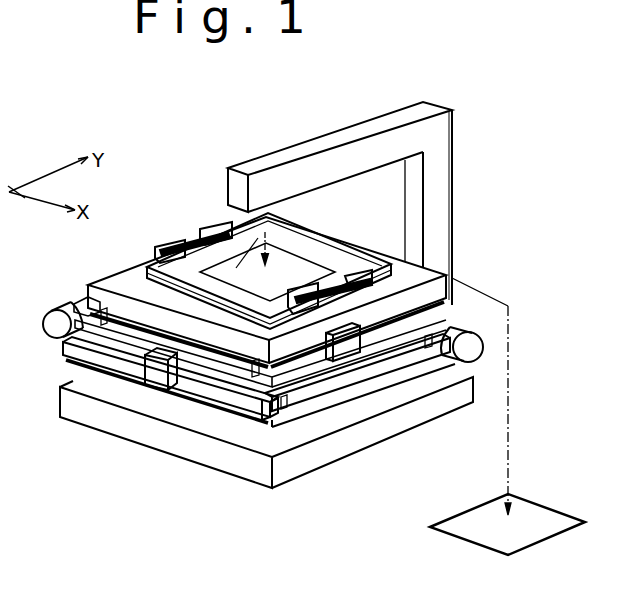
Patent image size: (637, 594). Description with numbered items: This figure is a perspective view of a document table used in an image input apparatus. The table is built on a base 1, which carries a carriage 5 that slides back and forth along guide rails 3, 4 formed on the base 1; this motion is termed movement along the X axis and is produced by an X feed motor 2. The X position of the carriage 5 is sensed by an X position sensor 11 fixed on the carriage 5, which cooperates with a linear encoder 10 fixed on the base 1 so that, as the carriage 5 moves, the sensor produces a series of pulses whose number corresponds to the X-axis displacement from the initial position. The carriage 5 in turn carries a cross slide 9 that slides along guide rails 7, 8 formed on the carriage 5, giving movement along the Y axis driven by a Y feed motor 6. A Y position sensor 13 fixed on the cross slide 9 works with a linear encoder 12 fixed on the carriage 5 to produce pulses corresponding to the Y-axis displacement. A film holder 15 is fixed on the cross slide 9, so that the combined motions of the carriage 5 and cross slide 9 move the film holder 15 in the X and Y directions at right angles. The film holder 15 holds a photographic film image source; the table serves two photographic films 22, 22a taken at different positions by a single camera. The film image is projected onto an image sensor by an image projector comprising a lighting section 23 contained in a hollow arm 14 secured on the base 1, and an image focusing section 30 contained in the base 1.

The base 1 is at (72, 411).
The X feed motor 2 is at (473, 333).
The guide rail 3 is at (285, 406).
The guide rail 4 is at (430, 344).
The carriage 5 is at (90, 303).
The Y feed motor 6 is at (50, 327).
The guide rail 7 is at (104, 320).
The guide rail 8 is at (254, 373).
The cross slide 9 is at (117, 282).
The linear encoder 10 is at (207, 400).
The X position sensor 11 is at (152, 380).
The linear encoder 12 is at (313, 379).
The Y position sensor 13 is at (357, 350).
The hollow arm 14 is at (428, 106).
The film holder 15 is at (234, 262).
The photographic film 22 is at (275, 296).
The photographic film 22a is at (537, 510).
The lighting section 23 is at (457, 232).
The image focusing section 30 is at (287, 483).